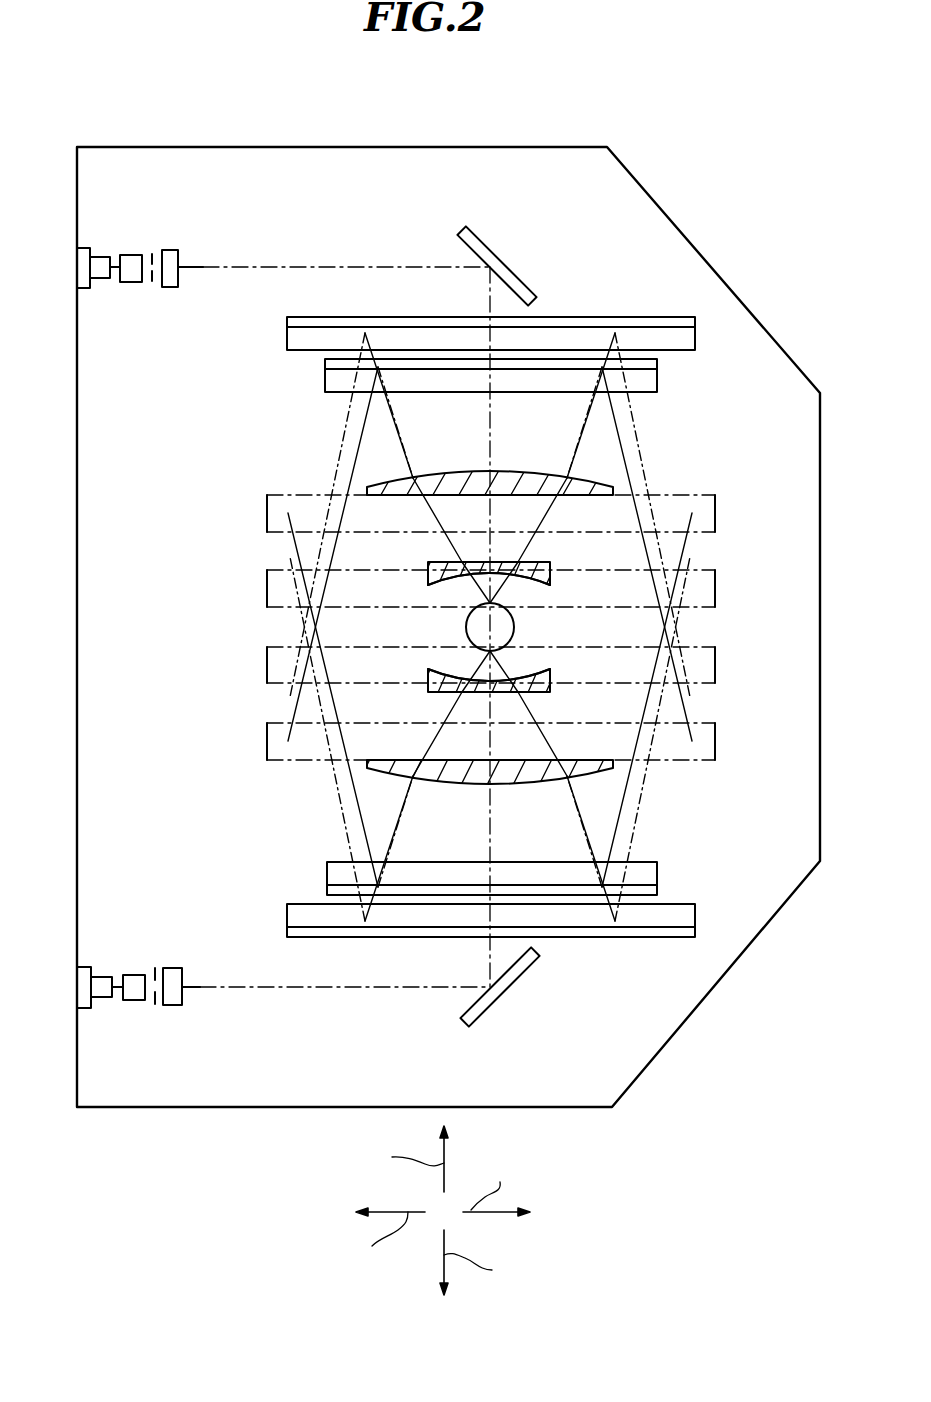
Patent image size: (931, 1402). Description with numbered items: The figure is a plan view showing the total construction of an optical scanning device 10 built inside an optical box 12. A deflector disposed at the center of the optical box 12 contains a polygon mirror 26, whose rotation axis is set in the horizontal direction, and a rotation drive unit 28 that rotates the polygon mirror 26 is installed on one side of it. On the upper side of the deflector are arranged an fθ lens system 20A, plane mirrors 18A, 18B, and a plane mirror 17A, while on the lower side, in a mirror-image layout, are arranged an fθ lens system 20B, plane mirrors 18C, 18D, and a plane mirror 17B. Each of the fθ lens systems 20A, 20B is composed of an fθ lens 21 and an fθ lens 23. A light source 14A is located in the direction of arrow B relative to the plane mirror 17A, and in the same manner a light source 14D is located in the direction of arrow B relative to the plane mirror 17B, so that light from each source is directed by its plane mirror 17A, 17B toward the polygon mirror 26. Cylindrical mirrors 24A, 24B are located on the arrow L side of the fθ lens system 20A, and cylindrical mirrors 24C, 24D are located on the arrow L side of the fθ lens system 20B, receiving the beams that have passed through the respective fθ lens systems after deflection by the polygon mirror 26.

The optical scanning device 10 is at (350, 128).
The optical box 12 is at (693, 247).
The light source 14A is at (140, 236).
The light source 14D is at (137, 1020).
The plane mirror 17A is at (486, 247).
The plane mirror 17B is at (495, 1002).
The plane mirror 18A is at (287, 335).
The plane mirror 18B is at (325, 380).
The plane mirror 18C is at (327, 873).
The plane mirror 18D is at (288, 920).
The fθ lens system 20A is at (446, 562).
The fθ lens system 20B is at (444, 692).
The fθ lens 21 is at (545, 562).
The fθ lens 23 is at (510, 470).
The cylindrical mirror 24A is at (267, 511).
The cylindrical mirror 24B is at (267, 590).
The cylindrical mirror 24C is at (267, 666).
The cylindrical mirror 24D is at (267, 741).
The polygon mirror 26 is at (473, 635).
The rotation drive unit 28 is at (535, 628).